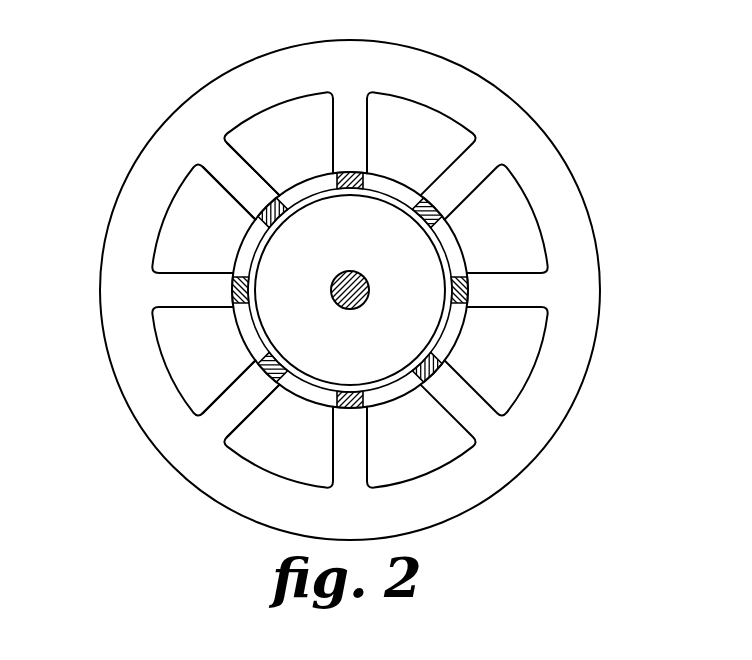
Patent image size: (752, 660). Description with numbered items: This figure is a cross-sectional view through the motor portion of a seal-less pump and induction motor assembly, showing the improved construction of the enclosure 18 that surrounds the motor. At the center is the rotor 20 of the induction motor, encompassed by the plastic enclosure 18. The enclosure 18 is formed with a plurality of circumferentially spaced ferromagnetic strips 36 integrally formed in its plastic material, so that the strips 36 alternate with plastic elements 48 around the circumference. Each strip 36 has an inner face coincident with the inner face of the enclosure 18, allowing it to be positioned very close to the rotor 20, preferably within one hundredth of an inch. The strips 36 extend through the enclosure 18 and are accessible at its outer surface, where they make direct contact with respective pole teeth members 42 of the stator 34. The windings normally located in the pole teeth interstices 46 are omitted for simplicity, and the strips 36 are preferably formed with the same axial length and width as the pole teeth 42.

The enclosure 18 is at (466, 242).
The rotor 20 is at (362, 353).
The stator 34 is at (364, 82).
The ferromagnetic strips 36 is at (413, 187).
The pole teeth members 42 is at (333, 137).
The pole teeth interstices 46 is at (187, 218).
The plastic elements 48 is at (247, 317).